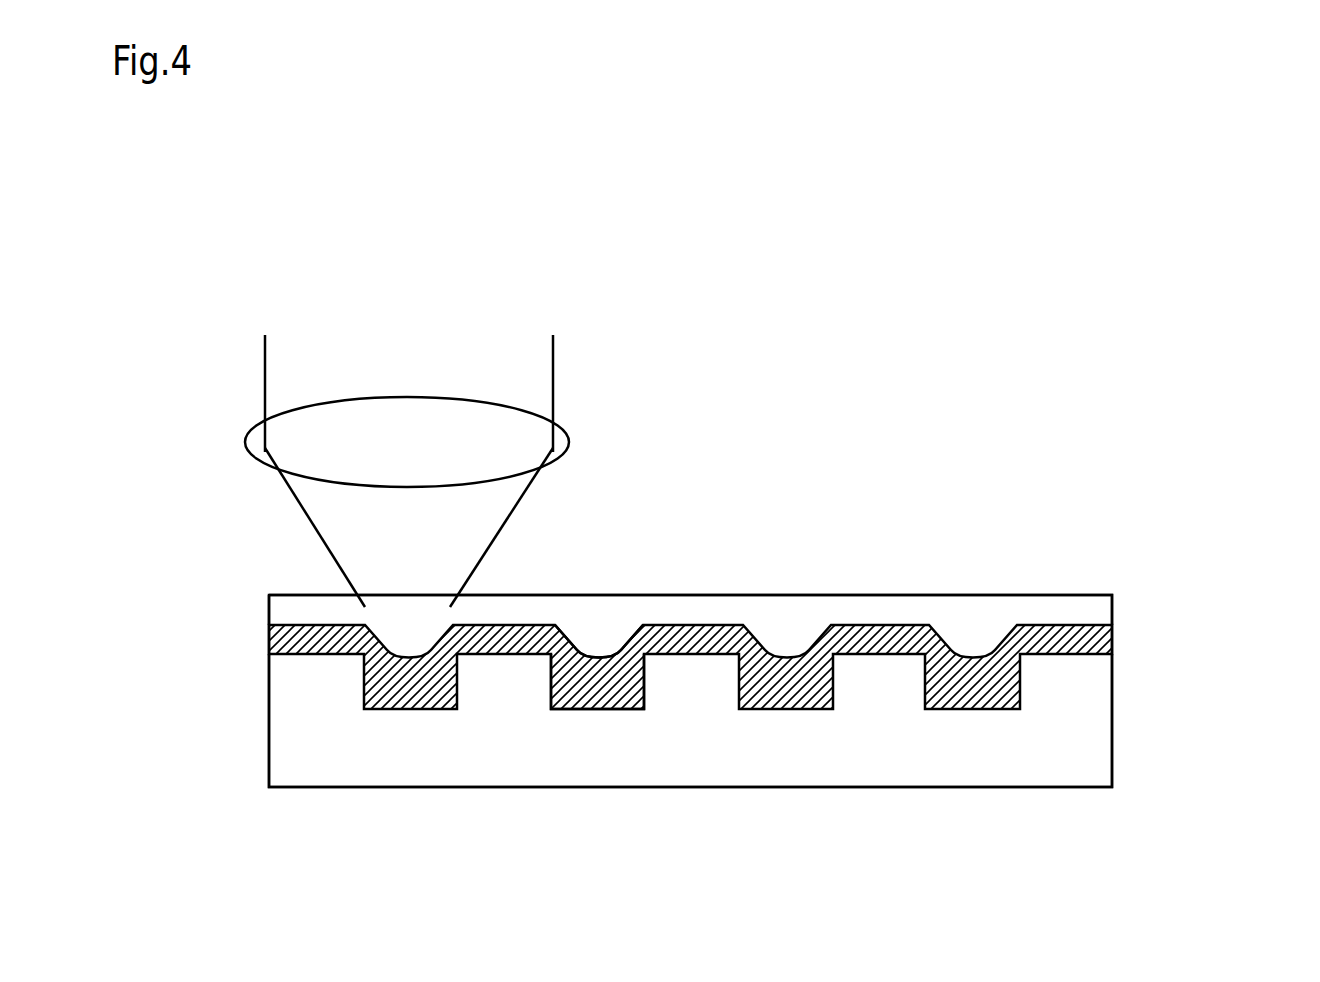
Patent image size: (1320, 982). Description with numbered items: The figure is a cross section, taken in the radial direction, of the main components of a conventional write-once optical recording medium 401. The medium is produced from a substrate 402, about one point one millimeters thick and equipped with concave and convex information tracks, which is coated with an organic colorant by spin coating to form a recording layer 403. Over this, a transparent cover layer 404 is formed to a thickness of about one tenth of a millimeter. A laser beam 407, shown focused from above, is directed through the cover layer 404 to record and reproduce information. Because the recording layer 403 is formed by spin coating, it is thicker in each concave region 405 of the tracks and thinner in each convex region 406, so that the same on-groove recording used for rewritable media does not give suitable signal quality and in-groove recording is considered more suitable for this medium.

The recording medium 401 is at (1000, 573).
The substrate 402 is at (1082, 757).
The recording layer 403 is at (1098, 643).
The cover layer 404 is at (1092, 608).
The concave region 405 is at (595, 710).
The convex region 406 is at (702, 637).
The laser beam 407 is at (565, 372).